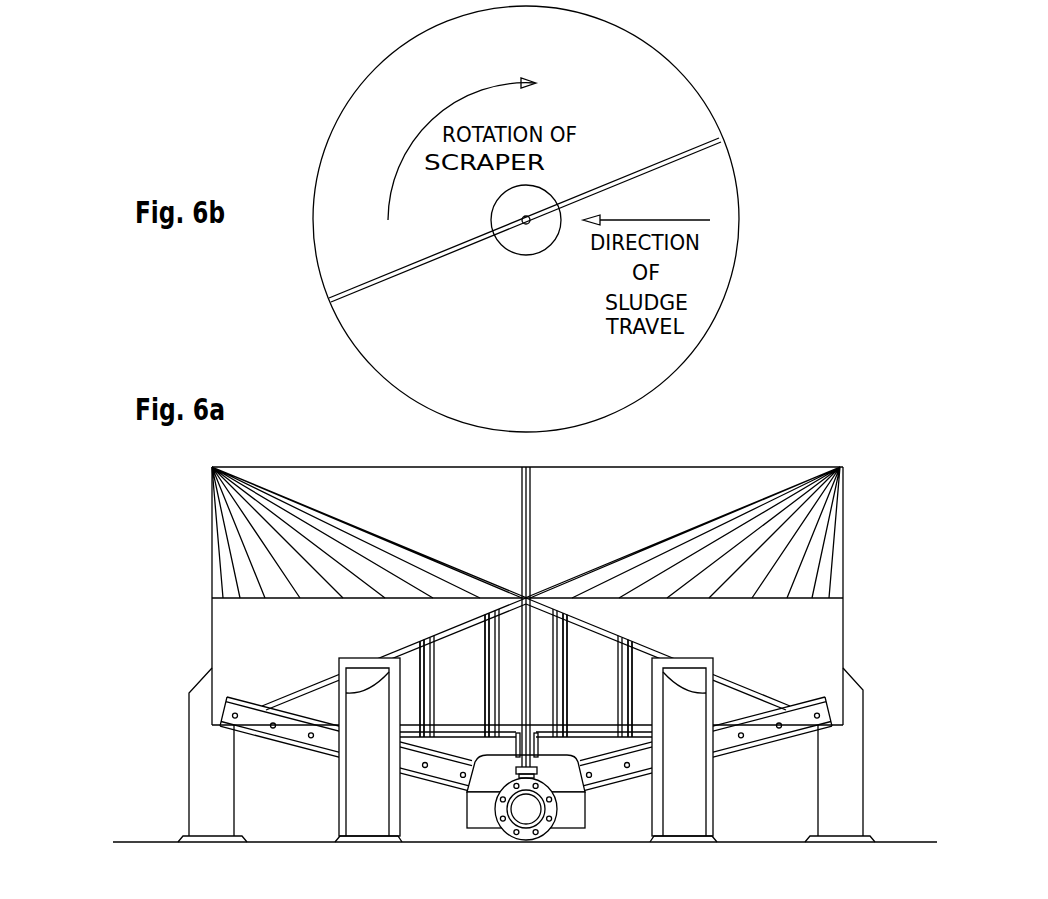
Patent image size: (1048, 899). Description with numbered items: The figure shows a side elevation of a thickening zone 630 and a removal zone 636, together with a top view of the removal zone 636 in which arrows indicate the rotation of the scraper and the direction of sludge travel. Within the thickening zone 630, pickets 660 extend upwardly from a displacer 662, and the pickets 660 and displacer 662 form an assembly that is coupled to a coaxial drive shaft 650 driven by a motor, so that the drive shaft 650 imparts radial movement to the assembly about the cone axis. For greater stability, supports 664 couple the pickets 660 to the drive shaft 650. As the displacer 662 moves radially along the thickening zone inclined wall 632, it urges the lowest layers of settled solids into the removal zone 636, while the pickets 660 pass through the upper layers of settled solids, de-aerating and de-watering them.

The thickening zone 630 is at (918, 637).
The thickening zone inclined wall 632 is at (262, 741).
The removal zone 636 is at (585, 810).
The coaxial drive shaft 650 is at (531, 520).
The pickets 660 is at (398, 652).
The displacer 662 is at (790, 703).
The supports 664 is at (483, 648).